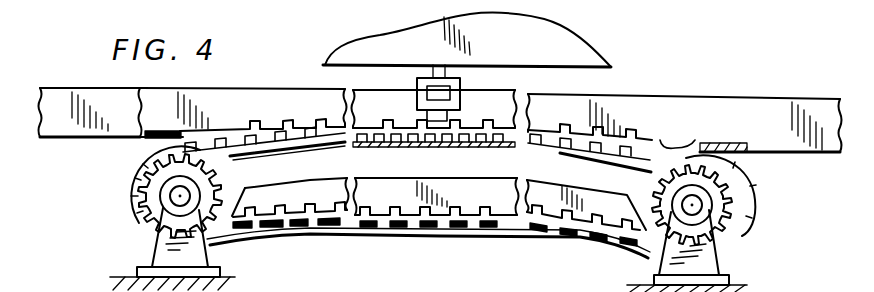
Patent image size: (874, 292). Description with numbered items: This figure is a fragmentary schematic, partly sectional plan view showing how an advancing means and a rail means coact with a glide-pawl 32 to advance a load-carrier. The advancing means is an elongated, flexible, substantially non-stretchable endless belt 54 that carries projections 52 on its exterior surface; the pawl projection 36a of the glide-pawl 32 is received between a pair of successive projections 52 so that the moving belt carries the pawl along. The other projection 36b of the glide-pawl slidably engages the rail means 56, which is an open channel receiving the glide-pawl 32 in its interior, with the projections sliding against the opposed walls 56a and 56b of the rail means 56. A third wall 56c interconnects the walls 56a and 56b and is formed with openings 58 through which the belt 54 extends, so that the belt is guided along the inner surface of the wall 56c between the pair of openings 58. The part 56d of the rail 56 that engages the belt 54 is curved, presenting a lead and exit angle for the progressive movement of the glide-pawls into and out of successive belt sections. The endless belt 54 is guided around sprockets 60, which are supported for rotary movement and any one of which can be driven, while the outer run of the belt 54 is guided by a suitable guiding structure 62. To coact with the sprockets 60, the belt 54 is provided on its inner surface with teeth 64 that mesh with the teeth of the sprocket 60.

The glide-pawl 32 is at (468, 80).
The pawl projection 36a is at (433, 121).
The projection 36b is at (425, 89).
The projections 52 is at (457, 121).
The endless belt 54 is at (641, 143).
The rail means 56 is at (733, 97).
The wall 56a is at (107, 77).
The wall 56b is at (252, 88).
The third wall 56c is at (152, 140).
The curved part of the rail 56d is at (503, 143).
The openings 58 is at (195, 136).
The sprockets 60 is at (708, 190).
The guiding structure 62 is at (455, 238).
The teeth 64 is at (213, 150).